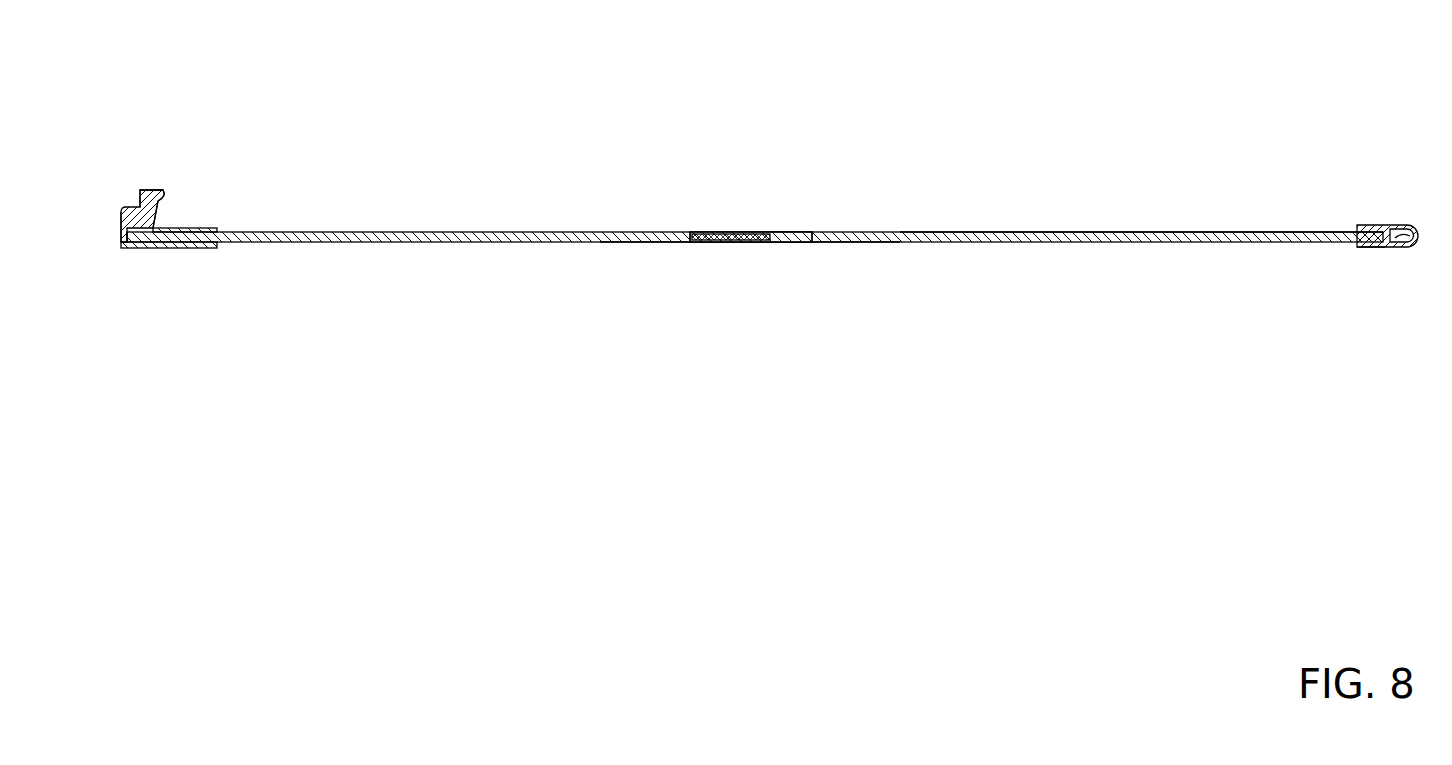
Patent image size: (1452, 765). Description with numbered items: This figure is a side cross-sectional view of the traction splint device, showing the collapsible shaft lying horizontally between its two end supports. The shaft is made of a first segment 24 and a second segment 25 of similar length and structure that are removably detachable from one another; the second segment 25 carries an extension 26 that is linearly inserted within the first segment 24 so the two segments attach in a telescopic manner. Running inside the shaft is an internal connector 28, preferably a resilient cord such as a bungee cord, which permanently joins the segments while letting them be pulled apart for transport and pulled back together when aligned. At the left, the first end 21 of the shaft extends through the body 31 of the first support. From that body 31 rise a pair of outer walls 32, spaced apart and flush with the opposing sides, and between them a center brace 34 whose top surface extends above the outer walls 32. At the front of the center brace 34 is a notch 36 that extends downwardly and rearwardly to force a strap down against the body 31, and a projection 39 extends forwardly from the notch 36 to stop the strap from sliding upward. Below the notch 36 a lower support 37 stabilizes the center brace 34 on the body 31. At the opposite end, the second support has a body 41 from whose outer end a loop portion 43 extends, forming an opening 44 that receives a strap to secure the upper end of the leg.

The first end 21 is at (124, 248).
The first segment 24 is at (507, 232).
The second segment 25 is at (1010, 231).
The extension 26 is at (796, 232).
The internal connector 28 is at (730, 243).
The body 31 is at (205, 248).
The outer walls 32 is at (122, 206).
The center brace 34 is at (182, 193).
The notch 36 is at (141, 190).
The lower support 37 is at (121, 238).
The projection 39 is at (146, 190).
The body 41 is at (1360, 248).
The loop portion 43 is at (1413, 226).
The opening 44 is at (1413, 248).